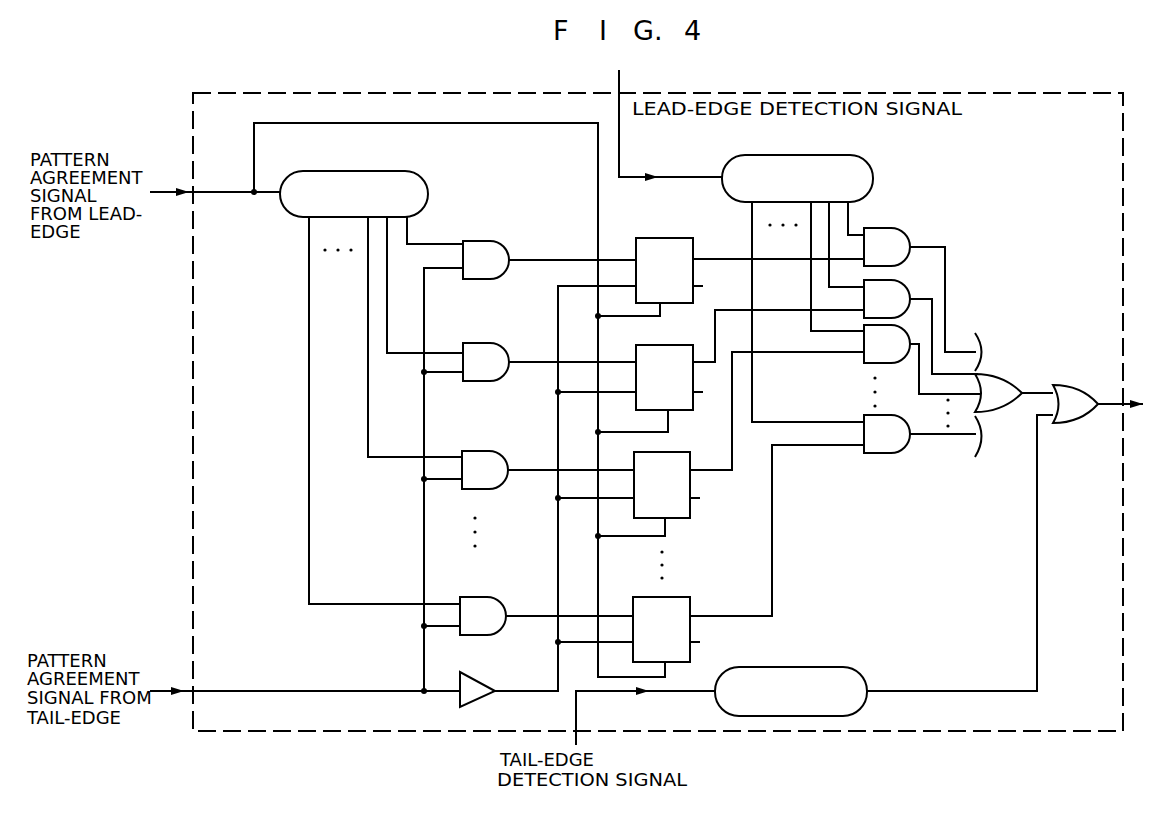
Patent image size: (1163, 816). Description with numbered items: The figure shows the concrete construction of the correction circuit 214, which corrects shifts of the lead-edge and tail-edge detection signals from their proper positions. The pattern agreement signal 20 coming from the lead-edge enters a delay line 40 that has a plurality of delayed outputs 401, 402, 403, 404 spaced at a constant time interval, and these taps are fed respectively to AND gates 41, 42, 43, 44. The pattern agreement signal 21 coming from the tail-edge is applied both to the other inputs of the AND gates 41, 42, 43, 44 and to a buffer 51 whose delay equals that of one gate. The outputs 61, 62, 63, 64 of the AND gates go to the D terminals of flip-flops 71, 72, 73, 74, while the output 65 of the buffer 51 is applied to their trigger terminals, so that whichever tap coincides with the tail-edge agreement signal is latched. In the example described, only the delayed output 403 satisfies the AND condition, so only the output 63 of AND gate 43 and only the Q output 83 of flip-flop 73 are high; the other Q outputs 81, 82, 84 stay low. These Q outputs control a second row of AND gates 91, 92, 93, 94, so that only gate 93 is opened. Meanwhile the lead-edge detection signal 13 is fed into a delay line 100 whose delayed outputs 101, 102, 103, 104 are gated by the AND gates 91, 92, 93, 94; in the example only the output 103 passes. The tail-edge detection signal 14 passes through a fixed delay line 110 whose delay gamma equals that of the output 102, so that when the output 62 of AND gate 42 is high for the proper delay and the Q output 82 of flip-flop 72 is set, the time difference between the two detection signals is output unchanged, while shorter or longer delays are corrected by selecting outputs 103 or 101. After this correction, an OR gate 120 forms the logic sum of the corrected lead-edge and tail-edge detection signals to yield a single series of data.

The correction circuit 214 is at (316, 92).
The pattern agreement signal coming from the lead-edge 20 is at (214, 191).
The pattern agreement signal coming from the tail-edge 21 is at (218, 689).
The lead-edge detection signal 13 is at (671, 176).
The tail-edge detection signal 14 is at (650, 694).
The delay line 40 is at (398, 171).
The delayed output 401 is at (409, 224).
The delayed output 402 is at (423, 374).
The delayed output 403 is at (367, 252).
The delayed output 404 is at (307, 238).
The AND gate 41 is at (493, 242).
The AND gate 42 is at (494, 343).
The AND gate 43 is at (493, 450).
The AND gate 44 is at (493, 597).
The buffer 51 is at (470, 703).
The output of AND gate 61 is at (537, 259).
The output of AND gate 62 is at (533, 361).
The output of AND gate 63 is at (527, 469).
The output of AND gate 64 is at (532, 615).
The output of the buffer 65 is at (526, 690).
The flip-flop 71 is at (667, 238).
The flip-flop 72 is at (665, 345).
The flip-flop 73 is at (685, 452).
The flip-flop 74 is at (685, 597).
The Q output of flip-flop 81 is at (718, 258).
The Q output of flip-flop 82 is at (778, 320).
The Q output of flip-flop 83 is at (724, 471).
The Q output of flip-flop 84 is at (734, 614).
The delay line 100 is at (838, 155).
The delayed output 101 is at (851, 211).
The delayed output 102 is at (828, 273).
The delayed output 103 is at (810, 325).
The delayed output 104 is at (754, 381).
The AND gate 91 is at (908, 231).
The AND gate 92 is at (897, 280).
The AND gate 93 is at (886, 366).
The AND gate 94 is at (894, 408).
The fixed delay line 110 is at (834, 667).
The OR gate 120 is at (1082, 386).